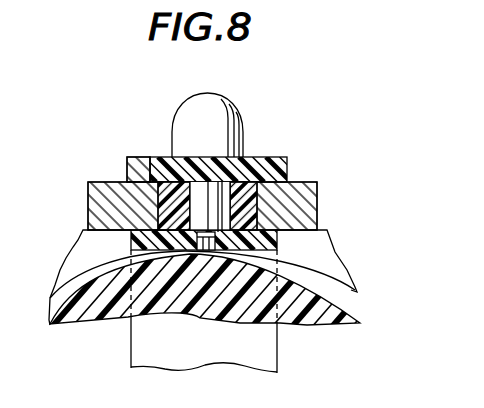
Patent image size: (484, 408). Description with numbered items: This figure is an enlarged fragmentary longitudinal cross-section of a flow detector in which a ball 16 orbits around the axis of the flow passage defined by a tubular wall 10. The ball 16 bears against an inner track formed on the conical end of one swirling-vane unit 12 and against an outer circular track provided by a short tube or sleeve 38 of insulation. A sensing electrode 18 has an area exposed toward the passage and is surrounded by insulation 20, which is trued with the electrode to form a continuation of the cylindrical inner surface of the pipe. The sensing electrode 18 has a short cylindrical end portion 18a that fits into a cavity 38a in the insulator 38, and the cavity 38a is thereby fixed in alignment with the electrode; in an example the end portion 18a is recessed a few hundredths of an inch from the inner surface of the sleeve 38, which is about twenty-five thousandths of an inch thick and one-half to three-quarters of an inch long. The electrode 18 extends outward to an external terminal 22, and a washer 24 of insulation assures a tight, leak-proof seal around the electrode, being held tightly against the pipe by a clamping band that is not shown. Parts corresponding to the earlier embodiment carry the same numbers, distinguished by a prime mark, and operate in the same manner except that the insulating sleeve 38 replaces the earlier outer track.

The tubular wall 10 is at (312, 200).
The swirling-vane unit 12 is at (76, 248).
The ball 16 is at (305, 323).
The sensing electrode 18 is at (163, 203).
The cylindrical end portion of sensing electrode 18a is at (280, 244).
The insulation 20 is at (258, 202).
The external terminal 22 is at (188, 112).
The washer of insulation 24 is at (268, 157).
The sleeve of insulation 38 is at (140, 342).
The cavity 38a is at (205, 257).